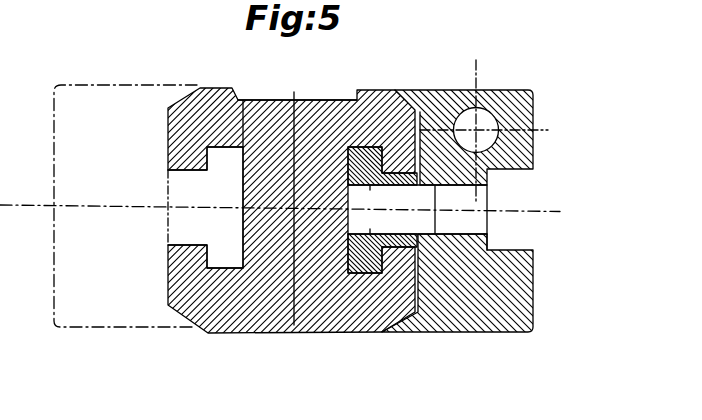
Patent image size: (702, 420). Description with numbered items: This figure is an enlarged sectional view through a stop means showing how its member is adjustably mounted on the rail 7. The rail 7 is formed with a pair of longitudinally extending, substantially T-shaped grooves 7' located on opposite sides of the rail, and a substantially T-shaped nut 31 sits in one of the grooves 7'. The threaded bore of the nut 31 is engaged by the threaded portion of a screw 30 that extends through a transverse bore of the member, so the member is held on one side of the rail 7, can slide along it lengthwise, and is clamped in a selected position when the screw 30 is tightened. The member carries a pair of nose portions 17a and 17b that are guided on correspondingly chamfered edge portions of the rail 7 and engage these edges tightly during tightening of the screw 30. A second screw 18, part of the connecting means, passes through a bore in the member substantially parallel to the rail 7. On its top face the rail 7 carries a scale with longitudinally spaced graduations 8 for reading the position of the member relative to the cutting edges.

The rail 7 is at (331, 237).
The T-shaped groove 7' is at (256, 256).
The graduations 8 is at (262, 100).
The nose portion 17a is at (410, 92).
The nose portion 17b is at (407, 327).
The screw 18 is at (480, 113).
The screw 30 is at (473, 220).
The T-shaped nut 31 is at (360, 162).